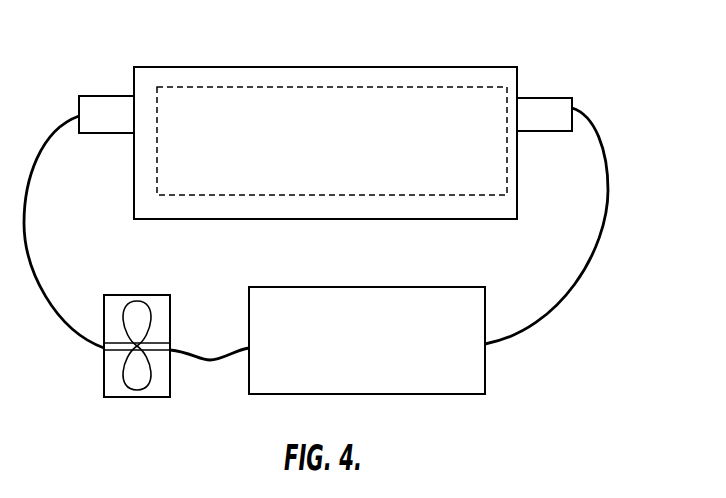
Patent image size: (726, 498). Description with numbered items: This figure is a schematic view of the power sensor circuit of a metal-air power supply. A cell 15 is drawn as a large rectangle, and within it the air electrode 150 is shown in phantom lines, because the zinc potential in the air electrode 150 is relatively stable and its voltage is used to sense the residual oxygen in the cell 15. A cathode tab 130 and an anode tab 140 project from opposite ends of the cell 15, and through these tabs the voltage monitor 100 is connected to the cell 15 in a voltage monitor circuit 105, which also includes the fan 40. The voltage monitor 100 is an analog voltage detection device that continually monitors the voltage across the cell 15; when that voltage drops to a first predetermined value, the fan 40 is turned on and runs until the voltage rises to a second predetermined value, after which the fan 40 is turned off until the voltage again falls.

The cell 15 is at (254, 68).
The air electrode 150 is at (409, 88).
The cathode tab 130 is at (107, 95).
The anode tab 140 is at (536, 98).
The voltage monitor circuit 105 is at (607, 209).
The voltage monitor 100 is at (329, 287).
The fan 40 is at (104, 371).